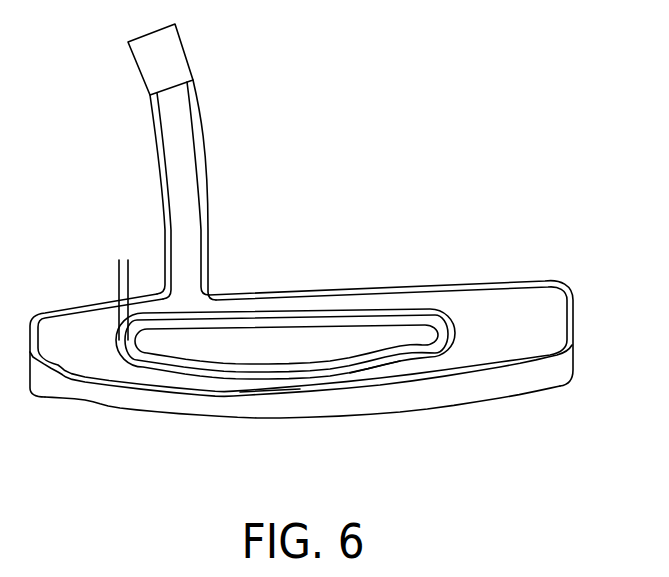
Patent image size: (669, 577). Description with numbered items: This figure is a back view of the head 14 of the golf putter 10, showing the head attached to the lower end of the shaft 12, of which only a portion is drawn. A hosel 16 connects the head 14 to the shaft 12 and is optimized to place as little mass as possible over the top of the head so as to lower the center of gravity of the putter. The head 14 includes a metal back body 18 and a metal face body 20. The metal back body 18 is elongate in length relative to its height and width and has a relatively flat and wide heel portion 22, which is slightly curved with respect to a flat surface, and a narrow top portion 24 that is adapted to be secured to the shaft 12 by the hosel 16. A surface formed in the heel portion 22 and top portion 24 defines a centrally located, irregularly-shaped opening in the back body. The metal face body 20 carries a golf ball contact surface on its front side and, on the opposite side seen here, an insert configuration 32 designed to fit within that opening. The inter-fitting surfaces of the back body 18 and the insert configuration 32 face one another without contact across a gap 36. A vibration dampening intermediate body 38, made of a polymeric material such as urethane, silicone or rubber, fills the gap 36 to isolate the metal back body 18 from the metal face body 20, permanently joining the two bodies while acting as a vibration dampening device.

The golf putter 10 is at (495, 107).
The shaft 12 is at (166, 58).
The head 14 is at (566, 255).
The hosel 16 is at (183, 280).
The metal back body 18 is at (550, 368).
The metal face body 20 is at (313, 345).
The heel portion 22 is at (135, 410).
The top portion 24 is at (398, 287).
The insert configuration 32 is at (373, 362).
The gap 36 is at (165, 273).
The vibration dampening intermediate body 38 is at (275, 382).